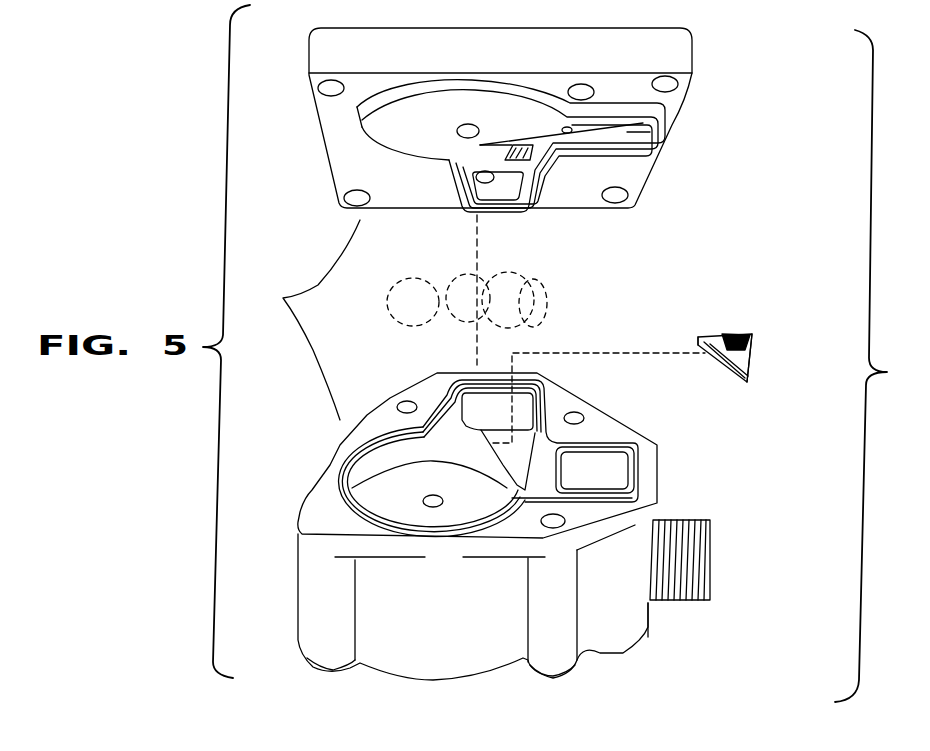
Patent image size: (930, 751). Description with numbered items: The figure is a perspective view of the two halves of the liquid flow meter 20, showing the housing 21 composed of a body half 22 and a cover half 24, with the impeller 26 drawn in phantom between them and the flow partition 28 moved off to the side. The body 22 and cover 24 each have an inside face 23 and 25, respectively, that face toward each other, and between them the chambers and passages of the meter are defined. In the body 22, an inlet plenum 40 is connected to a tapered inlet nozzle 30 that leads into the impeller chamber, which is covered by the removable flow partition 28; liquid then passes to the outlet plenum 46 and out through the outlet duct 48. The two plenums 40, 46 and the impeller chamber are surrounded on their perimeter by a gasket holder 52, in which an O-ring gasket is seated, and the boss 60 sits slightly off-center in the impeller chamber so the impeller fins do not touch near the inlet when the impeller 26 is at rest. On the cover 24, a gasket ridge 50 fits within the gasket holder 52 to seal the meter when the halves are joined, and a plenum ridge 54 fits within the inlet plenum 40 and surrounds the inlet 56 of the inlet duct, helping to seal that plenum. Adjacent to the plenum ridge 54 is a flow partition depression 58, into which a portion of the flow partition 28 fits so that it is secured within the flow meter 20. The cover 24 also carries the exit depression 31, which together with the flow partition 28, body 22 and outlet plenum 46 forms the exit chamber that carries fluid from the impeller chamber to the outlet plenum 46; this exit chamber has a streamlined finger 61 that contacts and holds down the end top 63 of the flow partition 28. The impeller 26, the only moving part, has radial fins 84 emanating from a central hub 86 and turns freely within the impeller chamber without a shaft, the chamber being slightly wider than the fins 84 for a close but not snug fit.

The liquid flow meter 20 is at (563, 353).
The housing 21 is at (300, 320).
The body half 22 is at (647, 637).
The inside face of body half 23 is at (317, 520).
The cover half 24 is at (681, 132).
The inside face of cover half 25 is at (333, 100).
The impeller 26 is at (543, 310).
The flow partition 28 is at (753, 340).
The tapered inlet nozzle 30 is at (513, 458).
The exit depression 31 is at (656, 136).
The inlet plenum 40 is at (497, 420).
The outlet plenum 46 is at (608, 483).
The outlet duct 48 is at (672, 518).
The gasket ridge 50 is at (360, 117).
The gasket holder 52 is at (337, 475).
The plenum ridge 54 is at (463, 195).
The inlet 56 is at (487, 181).
The flow partition depression 58 is at (527, 152).
The boss 60 is at (448, 483).
The streamlined finger 61 is at (572, 130).
The end top of flow partition 63 is at (752, 357).
The radial fins 84 is at (390, 300).
The central hub 86 is at (445, 305).